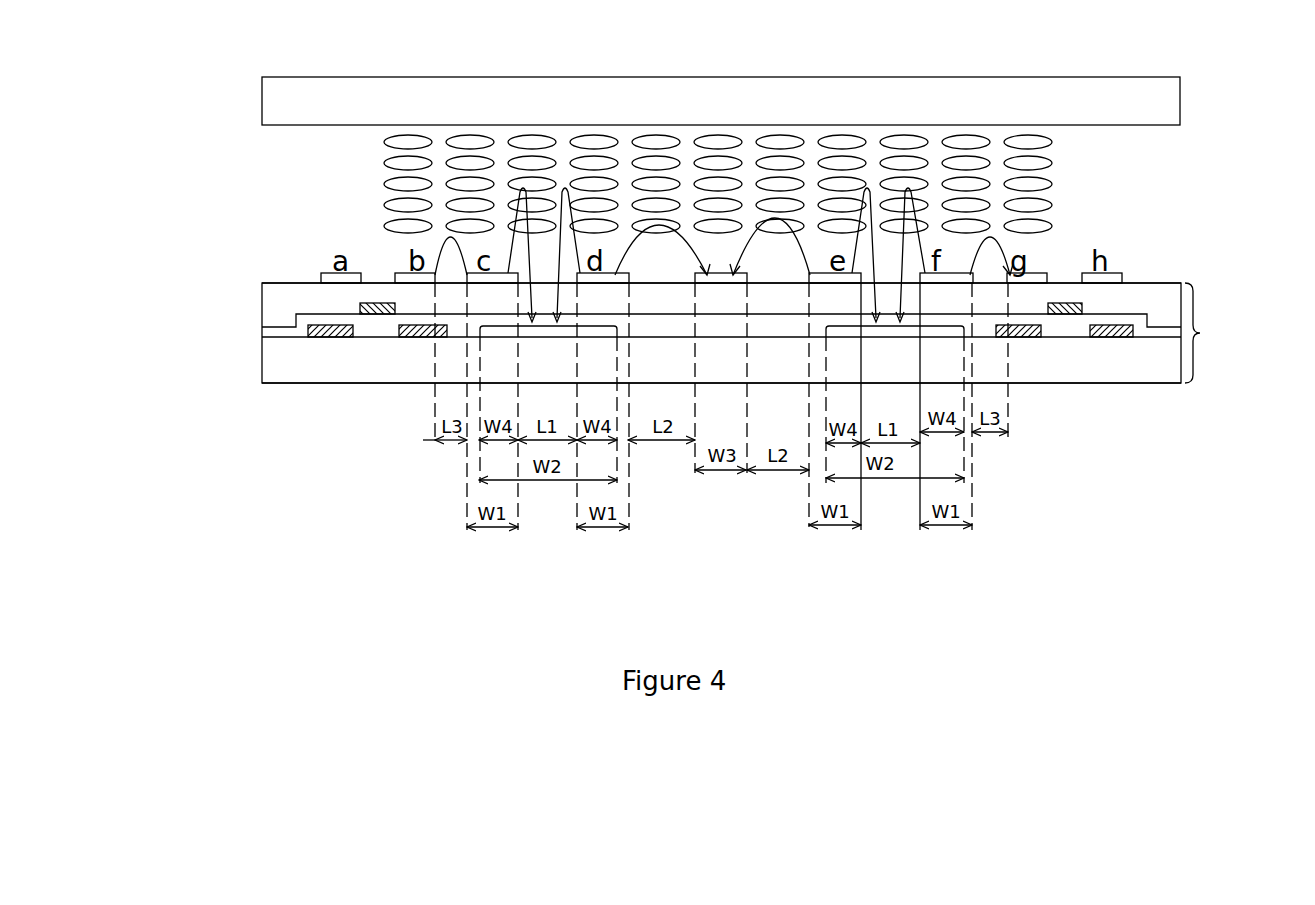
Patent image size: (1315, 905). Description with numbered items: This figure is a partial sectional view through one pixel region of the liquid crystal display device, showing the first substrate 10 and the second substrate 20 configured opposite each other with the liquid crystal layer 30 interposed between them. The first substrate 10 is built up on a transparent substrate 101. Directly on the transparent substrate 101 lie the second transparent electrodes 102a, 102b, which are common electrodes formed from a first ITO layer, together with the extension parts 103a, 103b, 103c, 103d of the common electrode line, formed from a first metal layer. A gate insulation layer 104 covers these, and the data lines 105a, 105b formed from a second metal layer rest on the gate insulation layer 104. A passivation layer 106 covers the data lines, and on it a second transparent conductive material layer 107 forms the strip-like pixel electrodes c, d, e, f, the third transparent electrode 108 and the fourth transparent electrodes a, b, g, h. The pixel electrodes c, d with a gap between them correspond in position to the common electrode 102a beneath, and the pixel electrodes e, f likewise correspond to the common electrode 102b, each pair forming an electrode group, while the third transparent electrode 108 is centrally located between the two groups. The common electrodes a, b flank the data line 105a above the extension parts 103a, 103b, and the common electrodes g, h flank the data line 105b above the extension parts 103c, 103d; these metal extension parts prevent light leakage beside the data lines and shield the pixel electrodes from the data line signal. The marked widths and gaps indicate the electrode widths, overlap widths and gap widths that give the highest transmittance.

The first substrate 10 is at (754, 333).
The second substrate 20 is at (1170, 92).
The liquid crystal layer 30 is at (1030, 165).
The transparent substrate 101 is at (1152, 376).
The second transparent electrode 102a is at (538, 330).
The second transparent electrode 102b is at (884, 330).
The extension part of the common electrode line 103a is at (322, 337).
The extension part of the common electrode line 103b is at (428, 337).
The extension part of the common electrode line 103c is at (1022, 337).
The extension part of the common electrode line 103d is at (1105, 337).
The gate insulation layer 104 is at (270, 330).
The data line 105a is at (360, 308).
The data line 105b is at (1078, 310).
The passivation layer 106 is at (295, 293).
The second transparent conductive material layer 107 is at (322, 279).
The third transparent electrode 108 is at (713, 272).